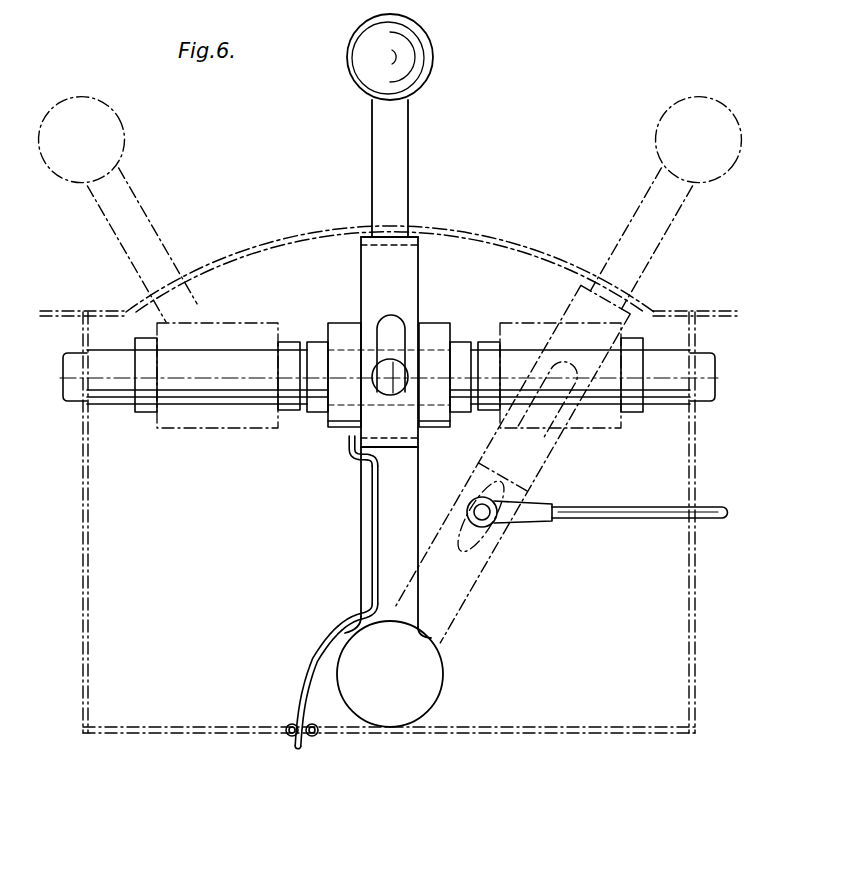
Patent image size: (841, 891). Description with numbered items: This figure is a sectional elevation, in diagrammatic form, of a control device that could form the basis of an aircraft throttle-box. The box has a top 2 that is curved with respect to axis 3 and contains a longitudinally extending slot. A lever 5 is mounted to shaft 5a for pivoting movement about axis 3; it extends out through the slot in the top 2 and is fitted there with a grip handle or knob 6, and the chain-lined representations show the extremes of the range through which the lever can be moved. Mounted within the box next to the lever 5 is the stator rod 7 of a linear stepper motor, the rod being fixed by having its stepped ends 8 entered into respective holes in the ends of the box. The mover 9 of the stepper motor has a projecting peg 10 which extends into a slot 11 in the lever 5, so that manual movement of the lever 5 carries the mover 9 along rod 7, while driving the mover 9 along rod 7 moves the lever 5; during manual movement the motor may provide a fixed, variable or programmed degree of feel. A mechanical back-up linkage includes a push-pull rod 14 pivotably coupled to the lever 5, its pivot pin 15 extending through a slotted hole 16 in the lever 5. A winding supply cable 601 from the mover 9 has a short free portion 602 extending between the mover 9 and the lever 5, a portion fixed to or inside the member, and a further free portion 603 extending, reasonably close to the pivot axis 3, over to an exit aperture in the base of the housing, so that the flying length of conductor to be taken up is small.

The top 2 is at (268, 241).
The axis 3 is at (390, 673).
The lever 5 is at (322, 592).
The shaft 5a is at (318, 661).
The grip handle or knob 6 is at (426, 78).
The stator rod 7 is at (120, 405).
The ends 8 is at (80, 372).
The mover 9 is at (442, 337).
The peg 10 is at (378, 372).
The slot 11 is at (398, 335).
The push-pull rod 14 is at (630, 505).
The pivot pin 15 is at (493, 536).
The slotted hole 16 is at (505, 480).
The winding supply cable 601 is at (370, 543).
The free portion 602 is at (342, 450).
The further free portion 603 is at (337, 630).